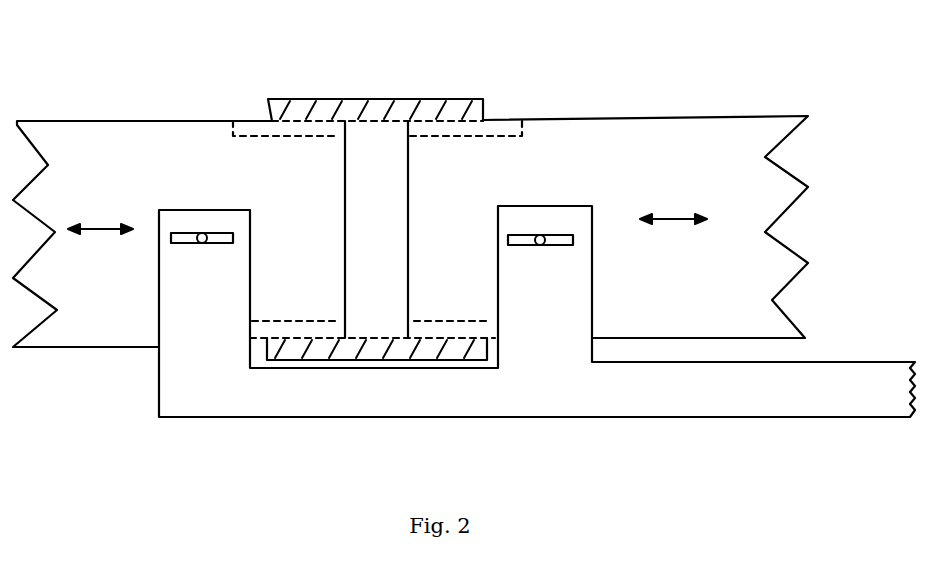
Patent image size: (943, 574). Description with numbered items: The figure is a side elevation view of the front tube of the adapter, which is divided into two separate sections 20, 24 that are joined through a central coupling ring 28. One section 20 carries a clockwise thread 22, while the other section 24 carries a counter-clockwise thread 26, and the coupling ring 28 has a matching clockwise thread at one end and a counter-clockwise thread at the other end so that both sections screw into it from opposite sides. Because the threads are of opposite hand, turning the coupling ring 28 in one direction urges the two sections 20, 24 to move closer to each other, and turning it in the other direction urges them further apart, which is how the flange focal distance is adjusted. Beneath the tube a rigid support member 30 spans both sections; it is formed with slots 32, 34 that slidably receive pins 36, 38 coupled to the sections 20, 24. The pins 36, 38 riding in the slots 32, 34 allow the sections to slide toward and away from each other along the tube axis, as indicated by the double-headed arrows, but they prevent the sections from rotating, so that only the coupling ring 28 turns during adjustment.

The section 20 is at (98, 133).
The clockwise thread 22 is at (240, 130).
The section 24 is at (677, 130).
The counter-clockwise thread 26 is at (512, 122).
The coupling ring 28 is at (393, 98).
The rigid support member 30 is at (735, 402).
The slot 32 is at (563, 248).
The slot 34 is at (226, 246).
The pin 36 is at (545, 235).
The pin 38 is at (206, 234).